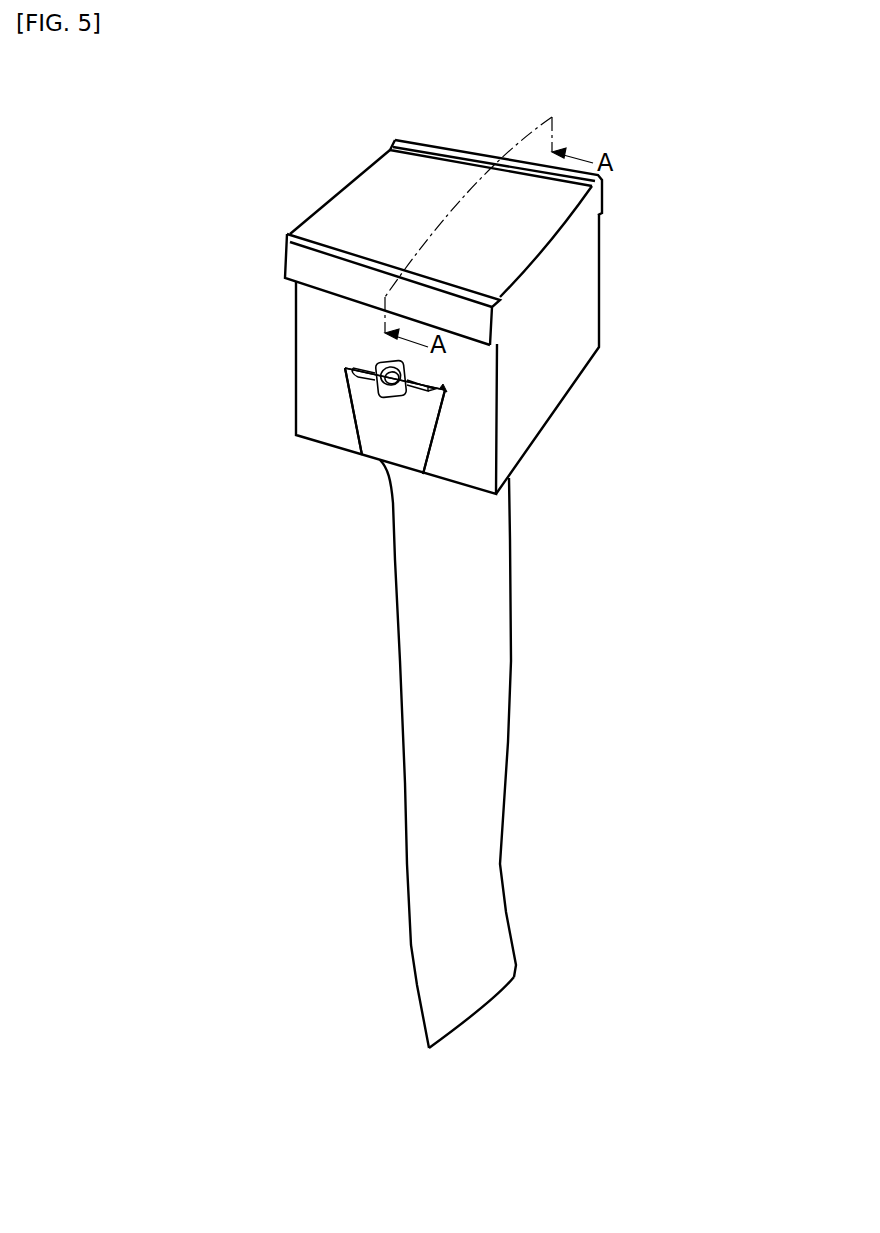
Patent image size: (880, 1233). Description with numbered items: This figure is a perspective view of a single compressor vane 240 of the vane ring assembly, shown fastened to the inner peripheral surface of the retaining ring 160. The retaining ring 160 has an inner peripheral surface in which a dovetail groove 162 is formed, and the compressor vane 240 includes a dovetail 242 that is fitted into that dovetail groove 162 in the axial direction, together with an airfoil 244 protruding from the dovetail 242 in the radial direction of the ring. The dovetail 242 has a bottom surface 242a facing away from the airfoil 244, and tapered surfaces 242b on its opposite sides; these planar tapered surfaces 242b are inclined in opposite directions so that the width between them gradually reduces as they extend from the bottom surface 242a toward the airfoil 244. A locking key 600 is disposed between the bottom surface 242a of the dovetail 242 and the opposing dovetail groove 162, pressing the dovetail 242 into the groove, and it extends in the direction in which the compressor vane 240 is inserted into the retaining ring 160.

The retaining ring 160 is at (540, 196).
The dovetail groove 162 is at (432, 381).
The compressor vane 240 is at (455, 670).
The dovetail 242 is at (421, 417).
The bottom surface 242a is at (345, 367).
The tapered surfaces 242b is at (413, 420).
The airfoil 244 is at (469, 570).
The locking key 600 is at (375, 385).